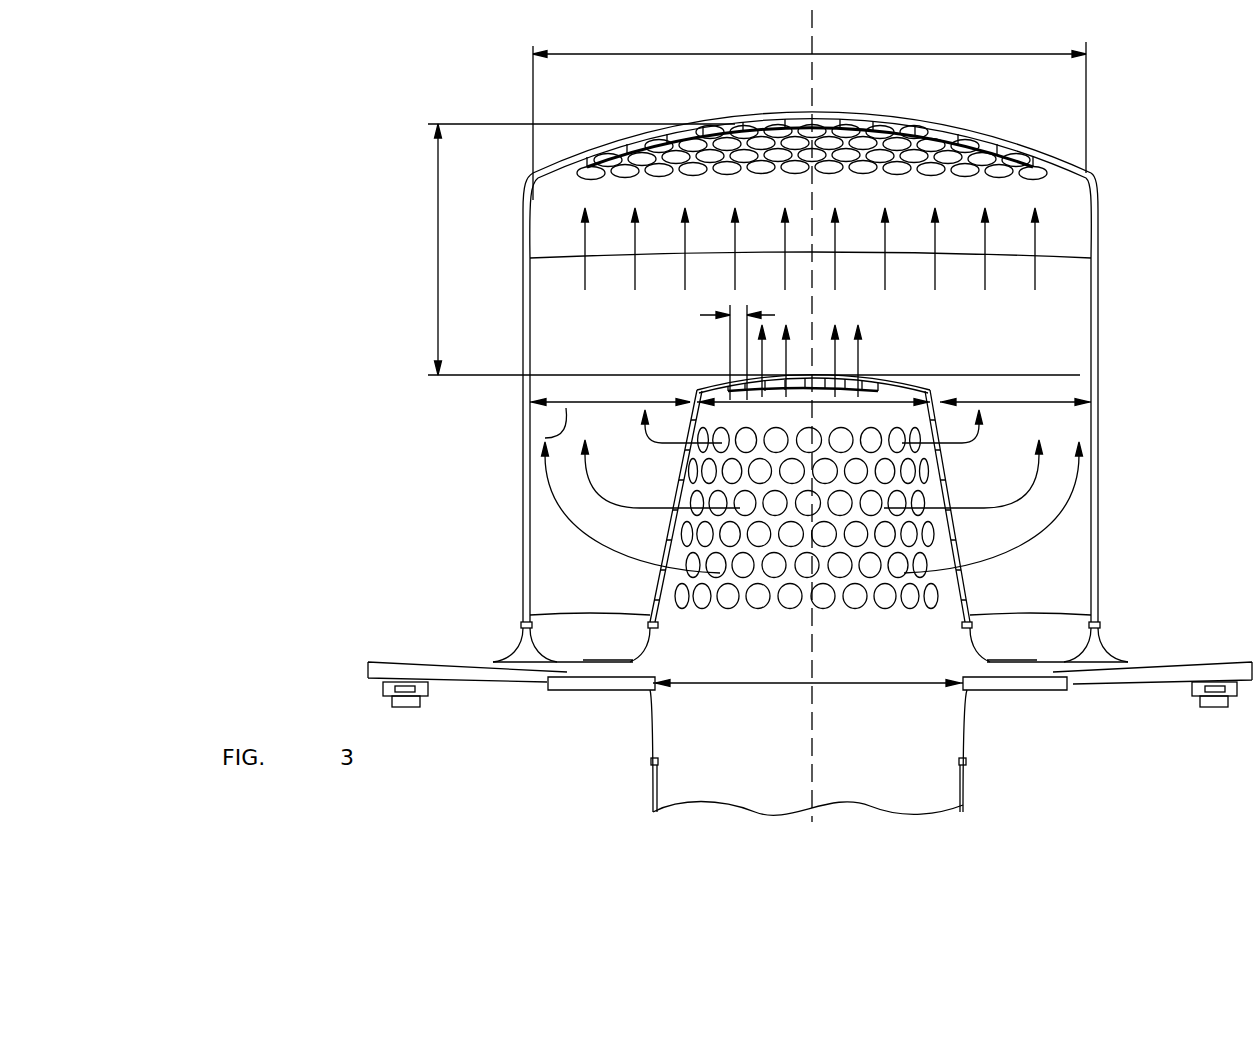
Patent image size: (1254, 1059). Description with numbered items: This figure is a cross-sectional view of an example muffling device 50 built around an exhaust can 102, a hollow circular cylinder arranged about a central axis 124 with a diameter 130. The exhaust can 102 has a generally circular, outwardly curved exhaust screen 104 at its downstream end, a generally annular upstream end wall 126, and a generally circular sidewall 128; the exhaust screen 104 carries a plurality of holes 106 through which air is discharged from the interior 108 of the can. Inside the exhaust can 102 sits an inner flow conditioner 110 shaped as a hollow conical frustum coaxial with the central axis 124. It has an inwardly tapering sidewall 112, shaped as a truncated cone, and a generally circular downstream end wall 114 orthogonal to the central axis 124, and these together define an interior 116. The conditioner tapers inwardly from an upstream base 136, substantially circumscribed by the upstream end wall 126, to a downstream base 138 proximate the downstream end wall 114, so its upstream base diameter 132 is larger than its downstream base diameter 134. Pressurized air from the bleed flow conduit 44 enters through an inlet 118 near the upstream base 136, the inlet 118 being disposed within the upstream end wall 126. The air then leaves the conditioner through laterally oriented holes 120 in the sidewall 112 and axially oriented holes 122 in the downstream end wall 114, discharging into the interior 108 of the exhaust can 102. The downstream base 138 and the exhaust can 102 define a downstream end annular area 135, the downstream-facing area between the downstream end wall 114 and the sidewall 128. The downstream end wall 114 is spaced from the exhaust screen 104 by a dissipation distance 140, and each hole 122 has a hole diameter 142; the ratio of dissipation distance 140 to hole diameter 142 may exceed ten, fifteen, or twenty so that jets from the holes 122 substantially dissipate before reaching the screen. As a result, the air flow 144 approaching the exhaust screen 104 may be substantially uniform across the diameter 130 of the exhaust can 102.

The bleed flow conduit 44 is at (965, 808).
The muffling device 50 is at (400, 330).
The exhaust can 102 is at (1105, 430).
The exhaust screen 104 is at (922, 115).
The holes 106 is at (978, 144).
The interior 108 is at (607, 290).
The inner flow conditioner 110 is at (928, 403).
The inwardly tapering sidewall 112 is at (958, 532).
The downstream end wall 114 is at (740, 383).
The interior 116 is at (690, 474).
The inlet 118 is at (692, 688).
The laterally oriented holes 120 is at (947, 500).
The axially oriented holes 122 is at (872, 388).
The central axis 124 is at (822, 98).
The upstream end wall 126 is at (535, 678).
The sidewall 128 is at (1098, 342).
The diameter 130 is at (910, 54).
The upstream base diameter 132 is at (930, 713).
The downstream base diameter 134 is at (905, 393).
The downstream end annular area 135 is at (545, 438).
The upstream base 136 is at (968, 655).
The downstream base 138 is at (700, 400).
The dissipation distance 140 is at (437, 215).
The hole diameter 142 is at (702, 314).
The air flow 144 is at (685, 247).